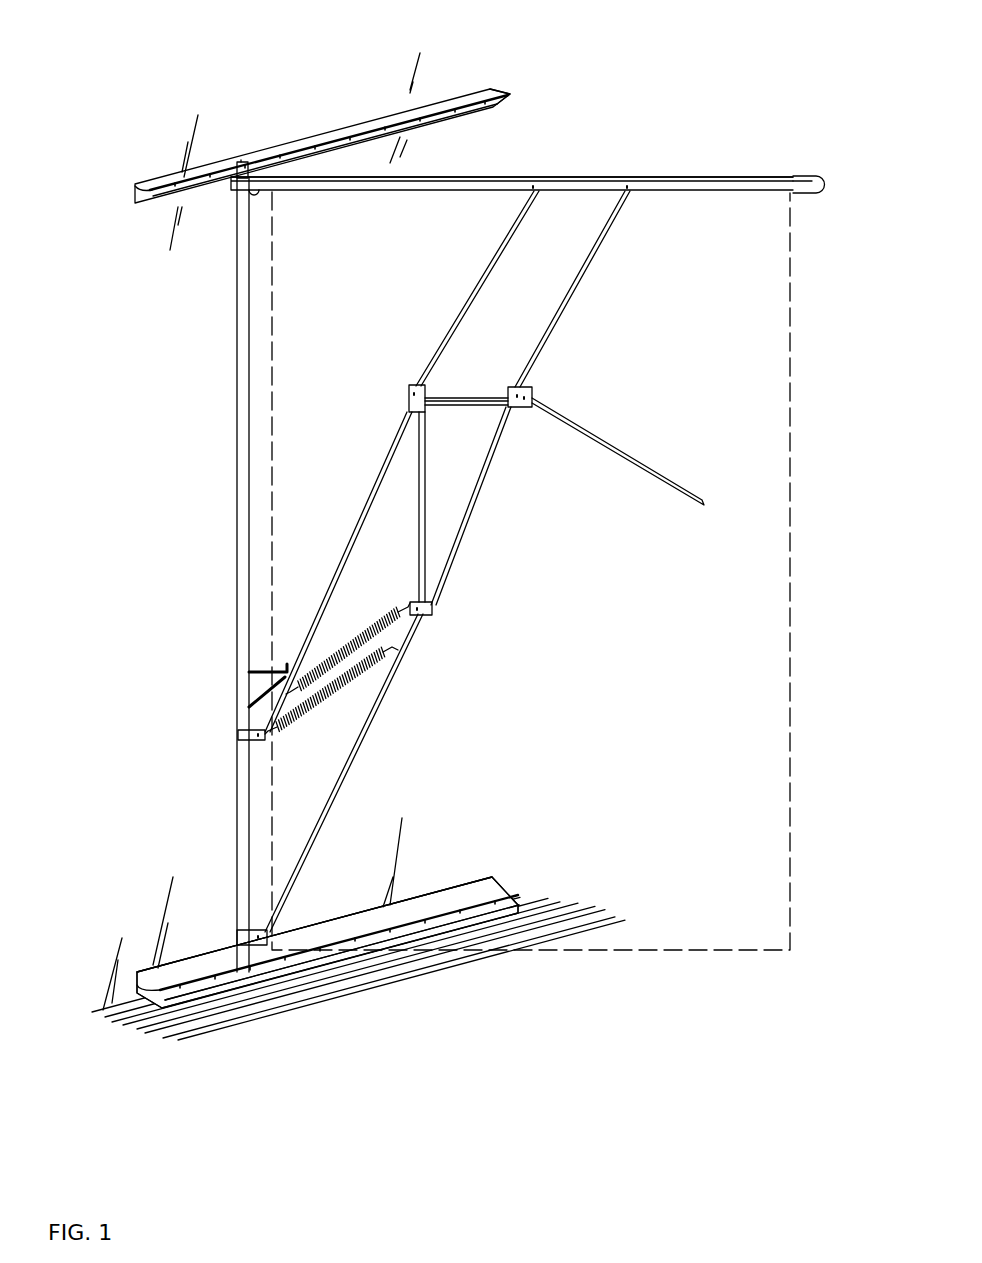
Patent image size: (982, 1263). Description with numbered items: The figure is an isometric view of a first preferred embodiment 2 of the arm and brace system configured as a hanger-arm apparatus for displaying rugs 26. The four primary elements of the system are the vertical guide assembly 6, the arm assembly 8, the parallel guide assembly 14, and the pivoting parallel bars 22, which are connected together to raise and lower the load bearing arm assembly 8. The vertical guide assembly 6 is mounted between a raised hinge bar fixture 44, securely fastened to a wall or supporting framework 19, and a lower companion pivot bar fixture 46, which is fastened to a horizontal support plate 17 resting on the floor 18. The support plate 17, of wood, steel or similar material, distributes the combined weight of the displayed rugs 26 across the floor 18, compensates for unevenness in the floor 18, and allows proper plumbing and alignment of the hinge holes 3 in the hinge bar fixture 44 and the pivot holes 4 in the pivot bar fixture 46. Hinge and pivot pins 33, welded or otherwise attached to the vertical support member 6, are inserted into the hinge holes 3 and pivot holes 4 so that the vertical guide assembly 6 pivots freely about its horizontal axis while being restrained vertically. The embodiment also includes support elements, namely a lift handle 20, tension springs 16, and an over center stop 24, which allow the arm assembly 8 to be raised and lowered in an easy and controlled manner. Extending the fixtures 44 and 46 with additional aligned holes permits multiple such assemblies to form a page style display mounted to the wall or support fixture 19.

The first preferred embodiment 2 is at (851, 127).
The hinge holes 3 is at (377, 120).
The pivot holes 4 is at (465, 912).
The vertical guide assembly 6 is at (230, 392).
The arm assembly 8 is at (712, 170).
The parallel guide assembly 14 is at (486, 514).
The tension springs 16 is at (363, 630).
The horizontal support plate 17 is at (193, 997).
The floor 18 is at (383, 990).
The wall or supporting framework 19 is at (408, 88).
The lift handle 20 is at (658, 478).
The pivoting parallel bars 22 is at (488, 265).
The over center stop 24 is at (287, 667).
The rugs 26 is at (790, 768).
The hinge and pivot pins 33 is at (238, 164).
The hinge bar fixture 44 is at (498, 90).
The pivot bar fixture 46 is at (182, 972).